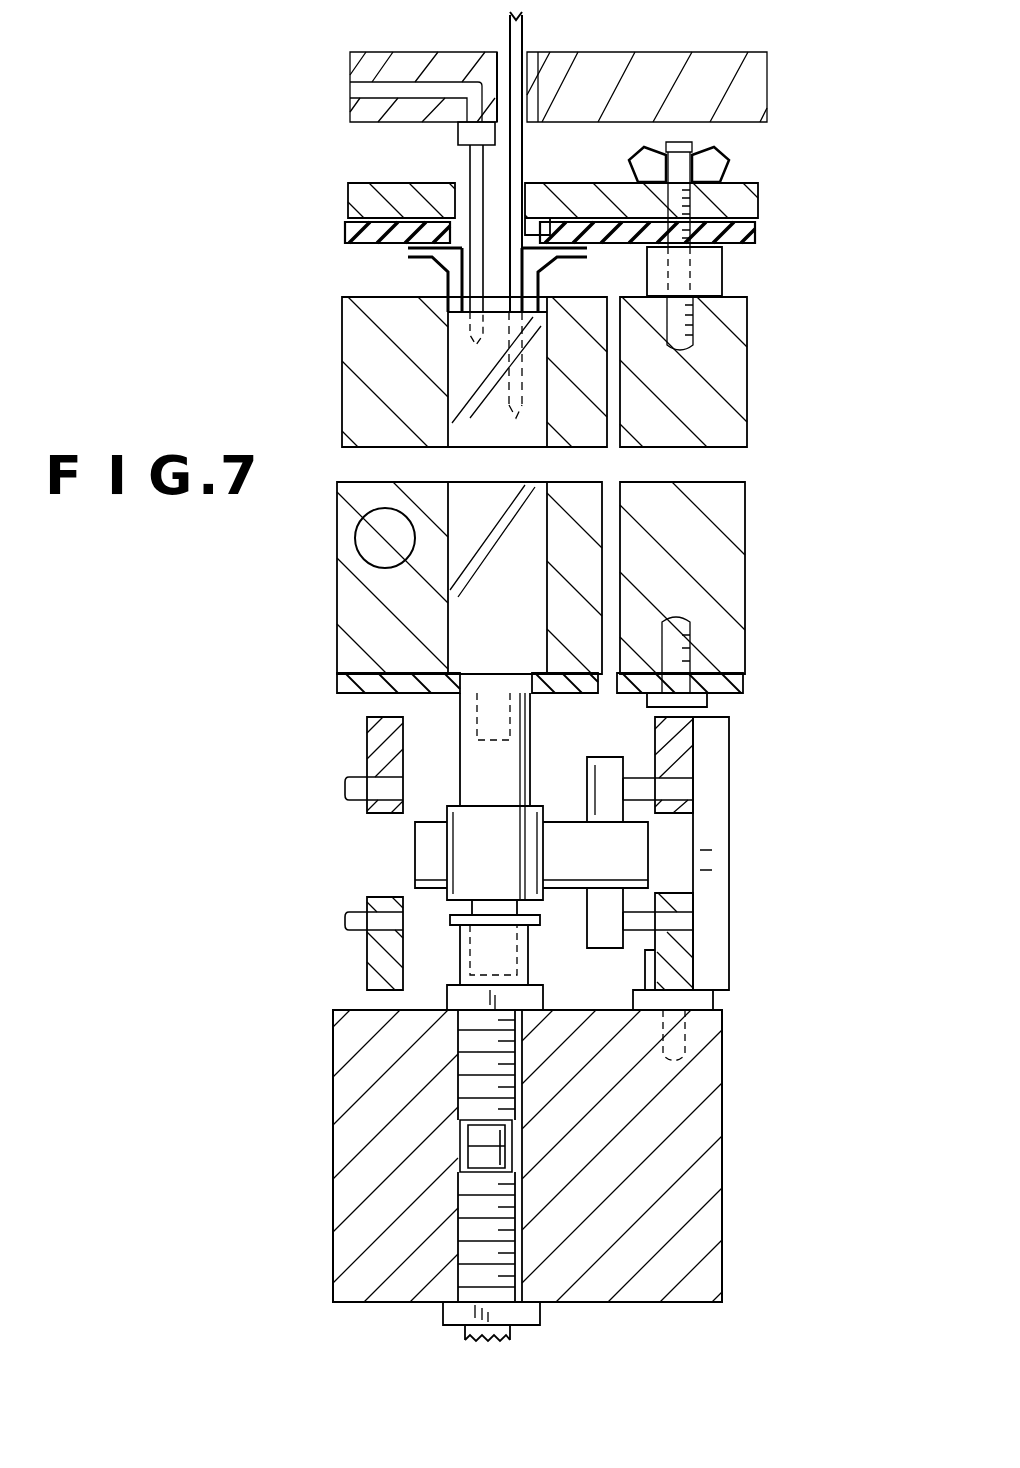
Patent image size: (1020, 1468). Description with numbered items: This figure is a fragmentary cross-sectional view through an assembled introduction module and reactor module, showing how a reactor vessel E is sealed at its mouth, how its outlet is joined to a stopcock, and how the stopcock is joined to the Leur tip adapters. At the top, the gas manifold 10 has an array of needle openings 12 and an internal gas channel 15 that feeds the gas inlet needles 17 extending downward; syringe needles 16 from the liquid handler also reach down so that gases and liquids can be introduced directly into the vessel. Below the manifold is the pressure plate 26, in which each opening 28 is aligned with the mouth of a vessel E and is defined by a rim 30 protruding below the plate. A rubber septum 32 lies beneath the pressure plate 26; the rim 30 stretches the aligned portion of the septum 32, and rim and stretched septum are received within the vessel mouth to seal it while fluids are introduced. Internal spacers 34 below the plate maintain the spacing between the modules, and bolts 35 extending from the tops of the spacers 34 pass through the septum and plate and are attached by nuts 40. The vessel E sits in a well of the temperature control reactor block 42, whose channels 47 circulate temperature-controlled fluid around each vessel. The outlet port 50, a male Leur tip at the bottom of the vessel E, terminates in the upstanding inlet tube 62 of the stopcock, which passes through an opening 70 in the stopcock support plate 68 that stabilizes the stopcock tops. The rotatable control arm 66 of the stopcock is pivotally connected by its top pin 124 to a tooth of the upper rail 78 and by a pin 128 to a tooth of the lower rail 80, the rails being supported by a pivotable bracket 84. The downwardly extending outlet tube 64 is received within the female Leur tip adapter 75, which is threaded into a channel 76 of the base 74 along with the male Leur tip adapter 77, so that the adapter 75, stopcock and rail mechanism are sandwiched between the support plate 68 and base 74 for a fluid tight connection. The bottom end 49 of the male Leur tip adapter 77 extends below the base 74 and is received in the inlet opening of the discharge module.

The gas manifold 10 is at (715, 52).
The needle openings 12 is at (497, 75).
The internal gas channel 15 is at (397, 88).
The syringe needles 16 is at (525, 37).
The gas inlet needles 17 is at (470, 165).
The pressure plate 26 is at (760, 200).
The opening 28 is at (455, 205).
The rim 30 is at (440, 238).
The rubber septum 32 is at (725, 243).
The internal spacers 34 is at (725, 272).
The bolts 35 is at (700, 342).
The nuts 40 is at (725, 163).
The temperature control reactor block 42 is at (730, 500).
The channels 47 is at (385, 538).
The bottom end of male Leur tip adapter 49 is at (445, 1312).
The outlet port 50 is at (465, 705).
The inlet tube 62 is at (527, 742).
The outlet tube 64 is at (520, 912).
The rotatable control arm 66 is at (695, 755).
The stopcock support plate 68 is at (733, 683).
The openings 70 is at (385, 692).
The base 74 is at (385, 1150).
The female Leur tip adapter 75 is at (480, 1075).
The channels 76 is at (515, 1155).
The male Leur tip adapter 77 is at (470, 1243).
The top rail 78 is at (693, 737).
The bottom rail 80 is at (370, 965).
The pivotable bracket 84 is at (717, 838).
The top pin 124 is at (350, 790).
The pin 128 is at (350, 925).
The reactor vessel E is at (445, 287).